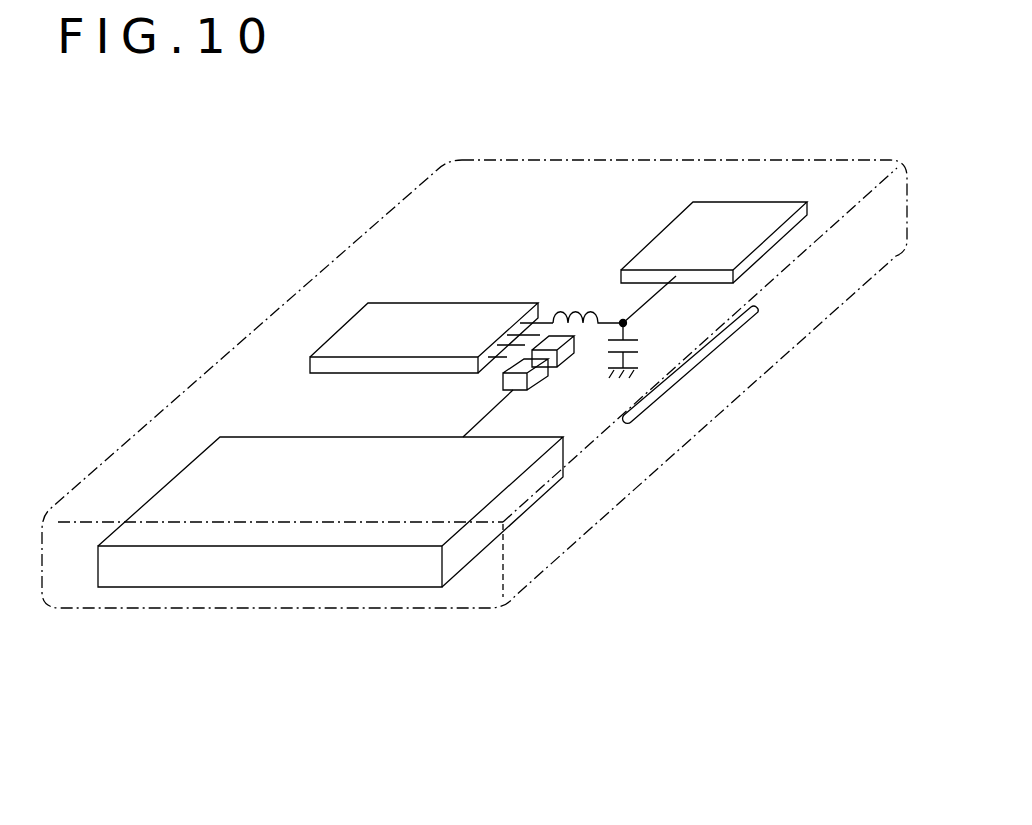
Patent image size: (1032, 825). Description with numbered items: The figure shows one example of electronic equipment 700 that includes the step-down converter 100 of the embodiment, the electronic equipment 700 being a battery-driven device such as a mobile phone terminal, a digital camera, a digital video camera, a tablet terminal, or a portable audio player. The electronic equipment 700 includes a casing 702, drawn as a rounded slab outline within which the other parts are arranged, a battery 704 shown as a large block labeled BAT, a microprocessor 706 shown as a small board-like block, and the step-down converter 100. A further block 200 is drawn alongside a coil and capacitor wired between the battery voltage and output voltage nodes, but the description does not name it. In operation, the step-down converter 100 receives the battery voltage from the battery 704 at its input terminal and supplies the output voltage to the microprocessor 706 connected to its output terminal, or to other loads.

The electronic equipment 700 is at (497, 754).
The casing 702 is at (738, 159).
The battery 704 is at (135, 560).
The power supply module 200 is at (395, 317).
The microprocessor 706 is at (686, 228).
The step-down converter 100 is at (717, 356).